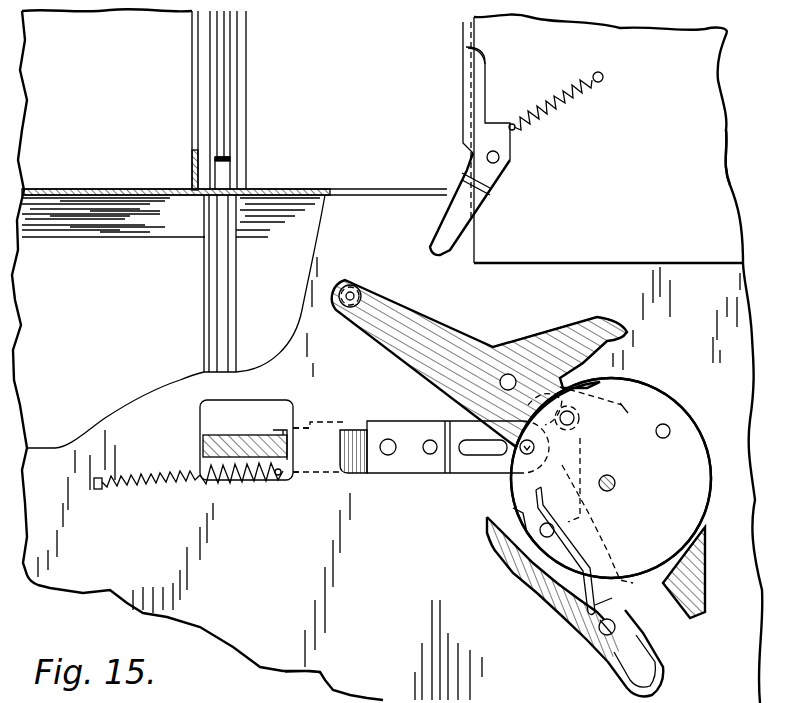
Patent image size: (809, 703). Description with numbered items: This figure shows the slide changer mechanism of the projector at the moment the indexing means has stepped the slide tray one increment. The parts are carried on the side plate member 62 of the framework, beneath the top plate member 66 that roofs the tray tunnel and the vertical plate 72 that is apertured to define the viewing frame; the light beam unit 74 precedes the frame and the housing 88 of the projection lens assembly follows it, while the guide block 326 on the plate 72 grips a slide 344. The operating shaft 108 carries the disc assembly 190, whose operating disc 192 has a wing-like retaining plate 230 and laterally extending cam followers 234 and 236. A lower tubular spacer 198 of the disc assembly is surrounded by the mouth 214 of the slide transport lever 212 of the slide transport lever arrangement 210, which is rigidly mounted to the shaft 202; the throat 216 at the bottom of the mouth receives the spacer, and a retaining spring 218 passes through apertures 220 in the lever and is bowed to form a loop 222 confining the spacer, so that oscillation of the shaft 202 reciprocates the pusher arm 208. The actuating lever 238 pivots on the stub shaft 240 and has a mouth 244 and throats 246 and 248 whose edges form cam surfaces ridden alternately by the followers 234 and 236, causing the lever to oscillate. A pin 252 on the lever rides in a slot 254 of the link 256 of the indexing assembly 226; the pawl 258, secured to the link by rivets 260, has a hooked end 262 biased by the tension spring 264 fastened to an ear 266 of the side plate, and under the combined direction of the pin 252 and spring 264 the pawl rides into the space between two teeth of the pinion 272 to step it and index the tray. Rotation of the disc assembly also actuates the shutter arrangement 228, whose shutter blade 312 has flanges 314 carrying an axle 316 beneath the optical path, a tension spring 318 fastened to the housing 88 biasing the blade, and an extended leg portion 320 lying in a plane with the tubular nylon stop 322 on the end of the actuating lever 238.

The side plate member 62 is at (299, 633).
The top plate member 66 is at (83, 195).
The vertical plate 72 is at (192, 167).
The light beam unit 74 is at (80, 89).
The housing 88 is at (717, 103).
The operating shaft 108 is at (613, 478).
The disc assembly 190 is at (718, 447).
The operating disc 192 is at (683, 443).
The lower tubular spacer 198 is at (505, 560).
The shaft 202 is at (603, 640).
The pusher arm 208 is at (220, 230).
The slide transport lever arrangement 210 is at (670, 657).
The slide transport lever 212 is at (540, 532).
The mouth 214 is at (605, 520).
The throat 216 is at (568, 560).
The retaining spring 218 is at (613, 679).
The apertures 220 is at (612, 598).
The loop 222 is at (527, 597).
The indexing assembly 226 is at (318, 485).
The shutter arrangement 228 is at (538, 130).
The retaining plate 230 is at (690, 587).
The cam follower 234 is at (663, 424).
The cam follower 236 is at (538, 400).
The actuating lever 238 is at (378, 300).
The stub shaft 240 is at (499, 377).
The mouth 244 is at (648, 300).
The throat 246 is at (555, 405).
The throat 248 is at (576, 362).
The pin 252 is at (505, 465).
The slot 254 is at (470, 455).
The link 256 is at (400, 421).
The pawl 258 is at (330, 420).
The rivets 260 is at (390, 455).
The hooked end 262 is at (270, 482).
The tension spring 264 is at (150, 484).
The ear 266 is at (97, 492).
The pinion 272 is at (233, 430).
The shutter blade 312 is at (462, 37).
The flanges 314 is at (478, 67).
The axle 316 is at (487, 157).
The tension spring 318 is at (573, 100).
The extended leg portion 320 is at (443, 248).
The tubular nylon stop 322 is at (350, 287).
The guide block 326 is at (243, 57).
The slide 344 is at (220, 118).